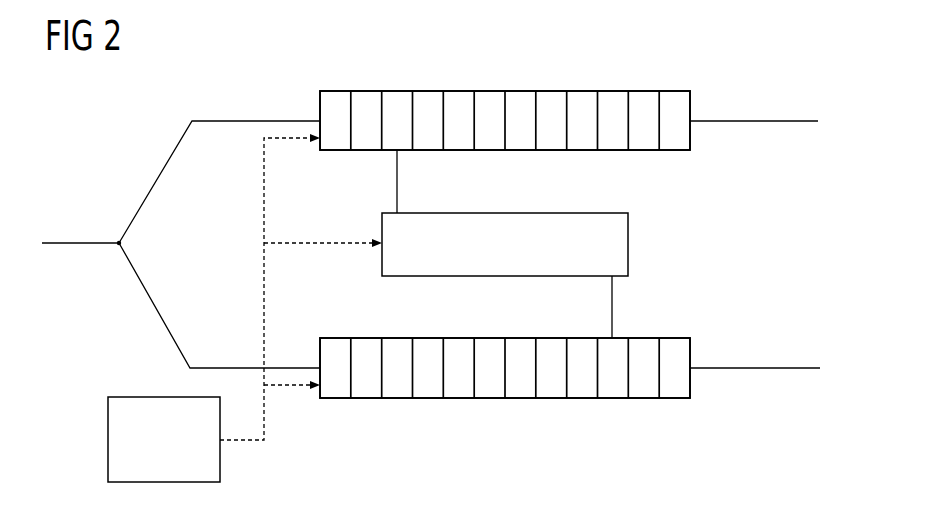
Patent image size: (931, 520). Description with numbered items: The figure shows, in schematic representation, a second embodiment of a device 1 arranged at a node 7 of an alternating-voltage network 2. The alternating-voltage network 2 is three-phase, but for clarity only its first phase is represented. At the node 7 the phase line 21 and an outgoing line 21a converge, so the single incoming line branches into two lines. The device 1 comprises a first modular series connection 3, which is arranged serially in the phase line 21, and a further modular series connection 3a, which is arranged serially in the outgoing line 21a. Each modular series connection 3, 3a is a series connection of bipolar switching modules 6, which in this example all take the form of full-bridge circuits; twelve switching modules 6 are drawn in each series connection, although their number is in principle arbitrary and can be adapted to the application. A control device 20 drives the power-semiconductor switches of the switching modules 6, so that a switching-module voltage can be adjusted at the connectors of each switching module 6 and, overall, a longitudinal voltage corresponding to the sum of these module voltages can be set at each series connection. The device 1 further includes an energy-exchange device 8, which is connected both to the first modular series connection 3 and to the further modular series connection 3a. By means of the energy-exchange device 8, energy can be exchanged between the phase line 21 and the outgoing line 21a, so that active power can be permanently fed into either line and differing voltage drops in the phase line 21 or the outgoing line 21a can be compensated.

The device 1 is at (586, 66).
The alternating-voltage network 2 is at (110, 136).
The first modular series connection 3 is at (318, 103).
The further modular series connection 3a is at (690, 380).
The switching module 6 is at (505, 244).
The node 7 is at (124, 244).
The energy-exchange device 8 is at (628, 243).
The control device 20 is at (106, 440).
The phase line 21 is at (767, 120).
The outgoing line 21a is at (762, 367).